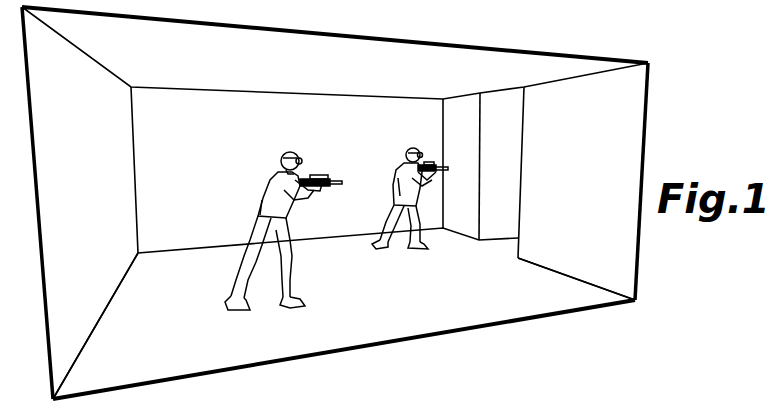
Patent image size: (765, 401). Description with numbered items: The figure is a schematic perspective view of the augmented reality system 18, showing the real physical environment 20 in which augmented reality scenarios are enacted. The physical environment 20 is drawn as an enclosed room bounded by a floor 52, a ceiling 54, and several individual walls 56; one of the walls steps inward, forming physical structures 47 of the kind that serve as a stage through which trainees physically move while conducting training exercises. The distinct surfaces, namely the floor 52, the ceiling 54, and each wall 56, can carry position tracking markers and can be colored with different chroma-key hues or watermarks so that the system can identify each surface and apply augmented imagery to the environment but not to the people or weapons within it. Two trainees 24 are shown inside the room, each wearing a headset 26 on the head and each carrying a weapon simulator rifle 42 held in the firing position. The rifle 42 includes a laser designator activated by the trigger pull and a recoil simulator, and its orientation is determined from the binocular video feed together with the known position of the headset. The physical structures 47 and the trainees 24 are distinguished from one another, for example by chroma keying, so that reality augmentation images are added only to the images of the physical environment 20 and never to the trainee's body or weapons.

The augmented reality system 18 is at (560, 42).
The physical environment 20 is at (408, 41).
The trainee 24 is at (262, 212).
The head-mounted display 26 is at (287, 151).
The rifle 42 is at (325, 177).
The physical structures 47 is at (113, 300).
The floor 52 is at (372, 311).
The ceiling 54 is at (346, 69).
The walls 56 is at (98, 175).